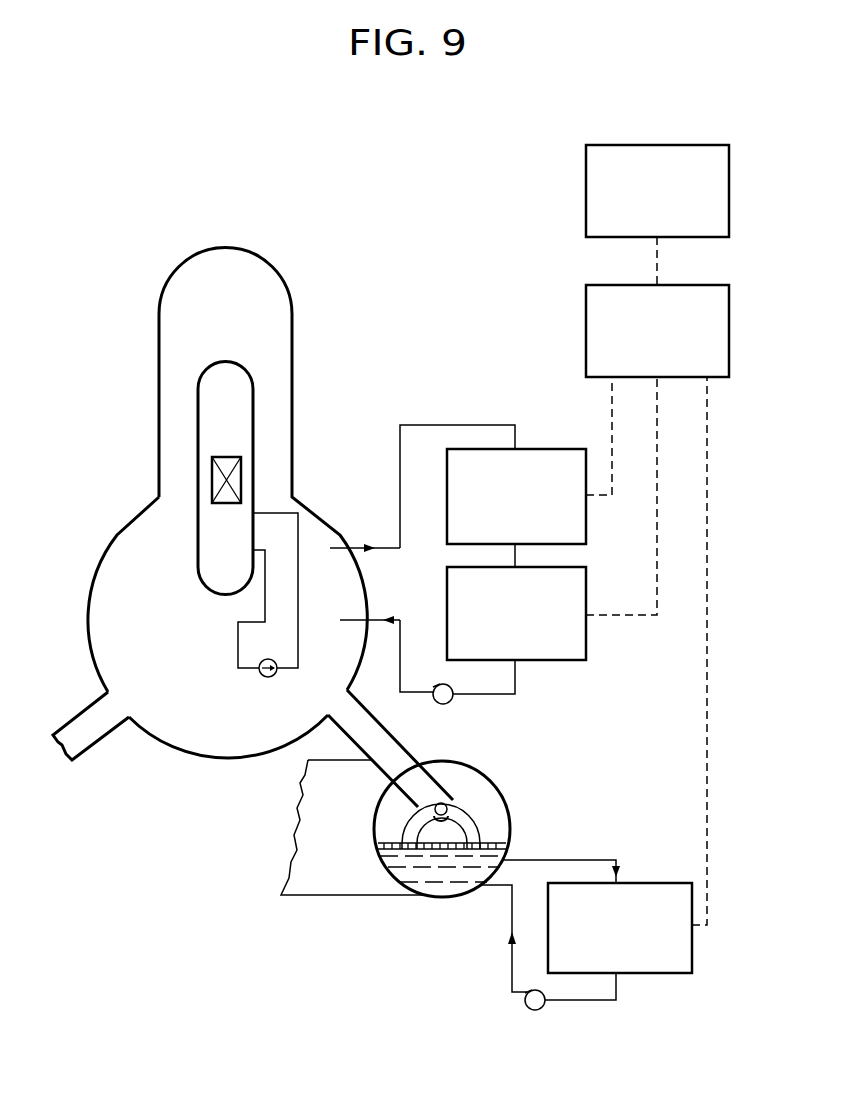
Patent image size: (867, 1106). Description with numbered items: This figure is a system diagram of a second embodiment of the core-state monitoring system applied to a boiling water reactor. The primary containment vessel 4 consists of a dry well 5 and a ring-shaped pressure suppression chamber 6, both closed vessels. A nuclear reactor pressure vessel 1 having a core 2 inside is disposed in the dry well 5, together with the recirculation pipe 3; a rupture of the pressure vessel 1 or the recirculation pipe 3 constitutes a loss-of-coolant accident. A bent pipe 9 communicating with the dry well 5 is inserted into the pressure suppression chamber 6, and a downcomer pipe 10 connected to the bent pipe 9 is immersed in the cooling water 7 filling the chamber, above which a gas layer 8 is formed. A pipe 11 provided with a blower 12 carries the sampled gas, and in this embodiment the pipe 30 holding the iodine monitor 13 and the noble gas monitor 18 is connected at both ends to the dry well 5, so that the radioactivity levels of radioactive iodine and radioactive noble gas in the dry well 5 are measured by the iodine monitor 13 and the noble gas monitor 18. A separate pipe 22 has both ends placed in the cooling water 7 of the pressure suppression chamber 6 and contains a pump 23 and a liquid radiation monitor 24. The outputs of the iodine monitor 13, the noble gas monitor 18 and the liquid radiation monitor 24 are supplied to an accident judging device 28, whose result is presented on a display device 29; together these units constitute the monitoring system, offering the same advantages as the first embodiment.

The nuclear reactor pressure vessel 1 is at (199, 376).
The core 2 is at (232, 457).
The recirculation pipe 3 is at (302, 526).
The primary containment vessel 4 is at (117, 535).
The dry well 5 is at (340, 536).
The pressure suppression chamber 6 is at (478, 773).
The cooling water 7 is at (397, 874).
The gas layer 8 is at (388, 812).
The bent pipe 9 is at (397, 739).
The downcomer pipe 10 is at (480, 823).
The pipe 11 is at (400, 470).
The blower 12 is at (443, 704).
The iodine monitor 13 is at (568, 448).
The noble gas monitor 18 is at (572, 662).
The pipe 22 is at (583, 858).
The pump 23 is at (534, 1010).
The liquid radiation monitor 24 is at (665, 975).
The accident judging device 28 is at (586, 316).
The display device 29 is at (586, 201).
The pipe 30 is at (383, 550).